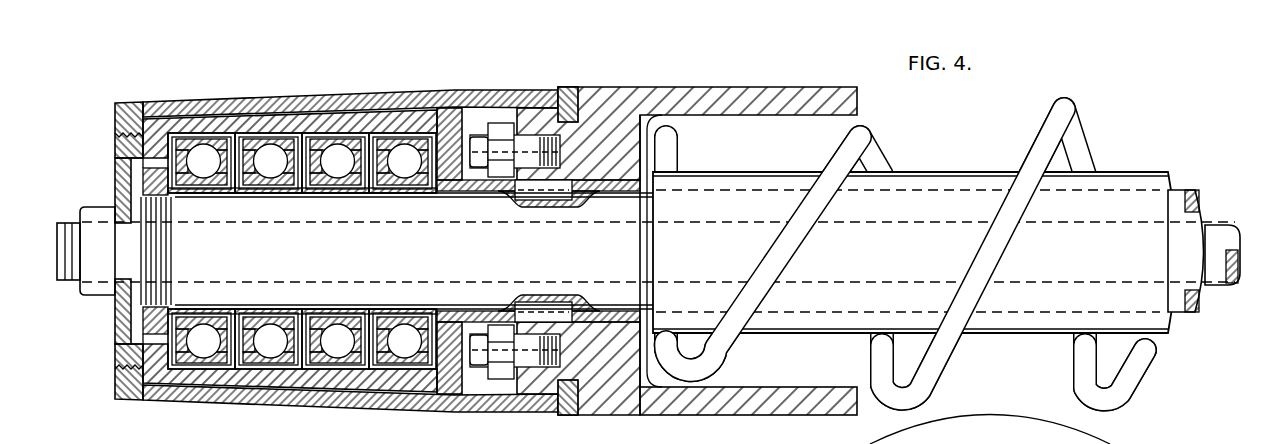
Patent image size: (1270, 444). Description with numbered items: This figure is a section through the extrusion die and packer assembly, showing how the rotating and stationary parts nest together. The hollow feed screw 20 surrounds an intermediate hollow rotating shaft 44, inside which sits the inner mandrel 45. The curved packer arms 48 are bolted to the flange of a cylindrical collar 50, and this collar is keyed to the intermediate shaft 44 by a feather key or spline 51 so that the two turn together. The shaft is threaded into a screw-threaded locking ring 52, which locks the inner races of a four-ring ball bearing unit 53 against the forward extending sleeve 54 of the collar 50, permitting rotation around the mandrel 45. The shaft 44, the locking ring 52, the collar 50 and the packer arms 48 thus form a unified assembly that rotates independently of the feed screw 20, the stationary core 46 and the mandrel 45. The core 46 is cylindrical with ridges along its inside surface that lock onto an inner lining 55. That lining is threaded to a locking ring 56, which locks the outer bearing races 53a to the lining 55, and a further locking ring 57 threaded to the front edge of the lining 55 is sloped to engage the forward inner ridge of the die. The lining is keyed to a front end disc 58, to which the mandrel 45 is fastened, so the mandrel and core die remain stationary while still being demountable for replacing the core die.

The feed screw 20 is at (948, 172).
The intermediate hollow rotating shaft 44 is at (552, 206).
The inner mandrel 45 is at (66, 279).
The stationary core 46 is at (340, 96).
The packer arms 48 is at (647, 425).
The cylindrical collar 50 is at (568, 88).
The feather key or spline 51 is at (530, 199).
The screw-threaded locking ring 52 is at (148, 322).
The four-ring ball bearing unit 53 is at (274, 308).
The outer bearing races 53a is at (325, 190).
The forward extending sleeve 54 is at (478, 192).
The inner lining 55 is at (210, 118).
The locking ring 56 is at (451, 110).
The locking ring 57 is at (118, 124).
The front end disc 58 is at (117, 182).